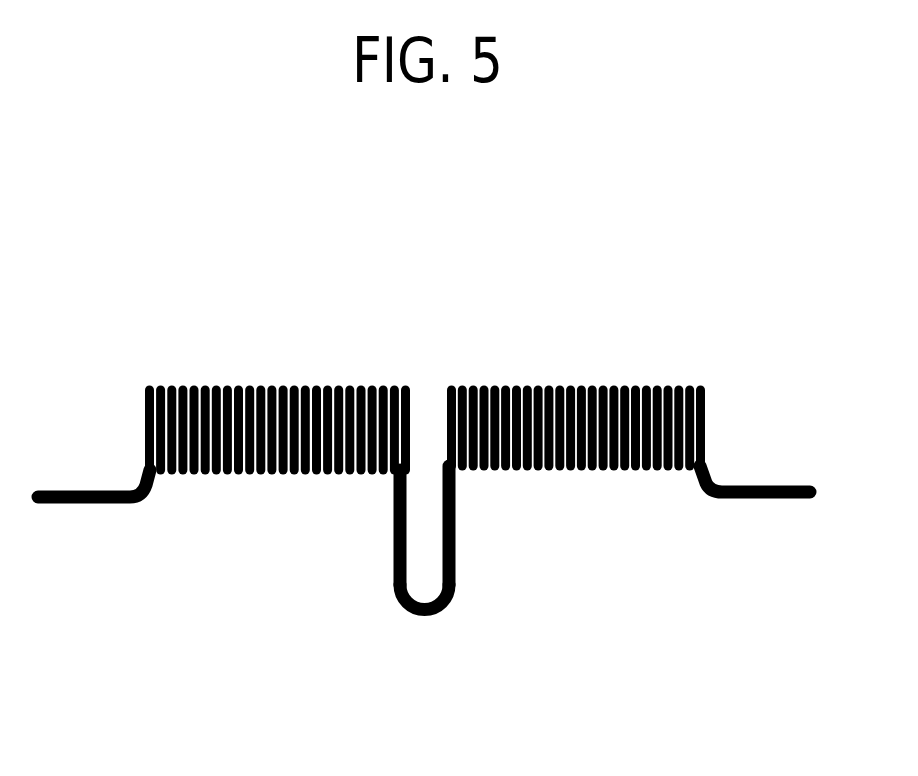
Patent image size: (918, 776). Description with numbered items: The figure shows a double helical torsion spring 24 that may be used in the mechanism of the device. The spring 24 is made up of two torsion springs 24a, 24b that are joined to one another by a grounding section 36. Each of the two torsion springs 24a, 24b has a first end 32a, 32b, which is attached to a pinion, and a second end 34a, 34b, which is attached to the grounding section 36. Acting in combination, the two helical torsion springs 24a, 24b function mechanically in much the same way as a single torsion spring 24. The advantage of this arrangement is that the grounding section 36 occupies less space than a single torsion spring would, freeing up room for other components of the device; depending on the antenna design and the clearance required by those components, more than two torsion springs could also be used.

The helical torsion spring 24 is at (237, 229).
The first torsion spring 24a is at (278, 398).
The second torsion spring 24b is at (592, 400).
The first end of first torsion spring 32a is at (82, 507).
The first end of second torsion spring 32b is at (765, 500).
The second end of first torsion spring 34a is at (397, 533).
The second end of second torsion spring 34b is at (458, 530).
The grounding section 36 is at (430, 608).